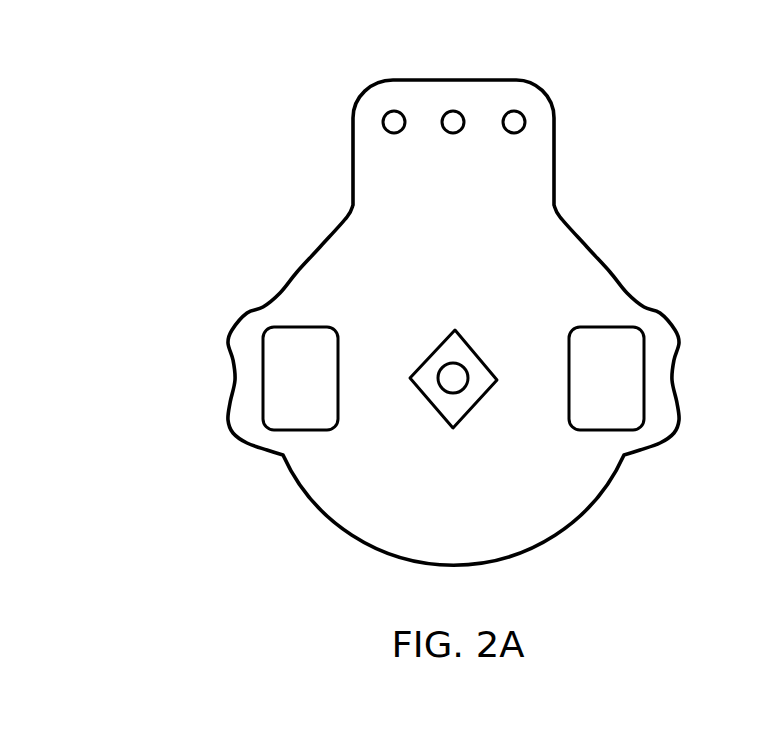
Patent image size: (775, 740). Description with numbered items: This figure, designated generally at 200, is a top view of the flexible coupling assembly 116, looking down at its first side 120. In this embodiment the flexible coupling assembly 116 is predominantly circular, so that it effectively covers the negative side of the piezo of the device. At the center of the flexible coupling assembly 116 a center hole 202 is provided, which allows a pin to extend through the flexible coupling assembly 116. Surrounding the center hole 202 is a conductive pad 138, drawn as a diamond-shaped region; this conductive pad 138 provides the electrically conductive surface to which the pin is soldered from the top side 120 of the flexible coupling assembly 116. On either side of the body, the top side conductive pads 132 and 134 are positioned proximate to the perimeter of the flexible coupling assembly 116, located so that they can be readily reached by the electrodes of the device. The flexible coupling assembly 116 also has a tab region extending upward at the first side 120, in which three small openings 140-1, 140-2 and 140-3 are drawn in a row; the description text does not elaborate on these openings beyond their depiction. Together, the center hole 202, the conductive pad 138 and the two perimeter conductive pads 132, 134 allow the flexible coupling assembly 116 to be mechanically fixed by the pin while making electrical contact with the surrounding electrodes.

The top view of flexible coupling assembly 200 is at (243, 142).
The flexible coupling assembly 116 is at (580, 236).
The first side 120 is at (428, 215).
The first mounting hole 140-1 is at (394, 111).
The second mounting hole 140-2 is at (453, 111).
The third mounting hole 140-3 is at (514, 111).
The top side conductive pad 132 is at (263, 380).
The top side conductive pad 134 is at (645, 378).
The conductive pad 138 is at (469, 412).
The center hole 202 is at (465, 368).